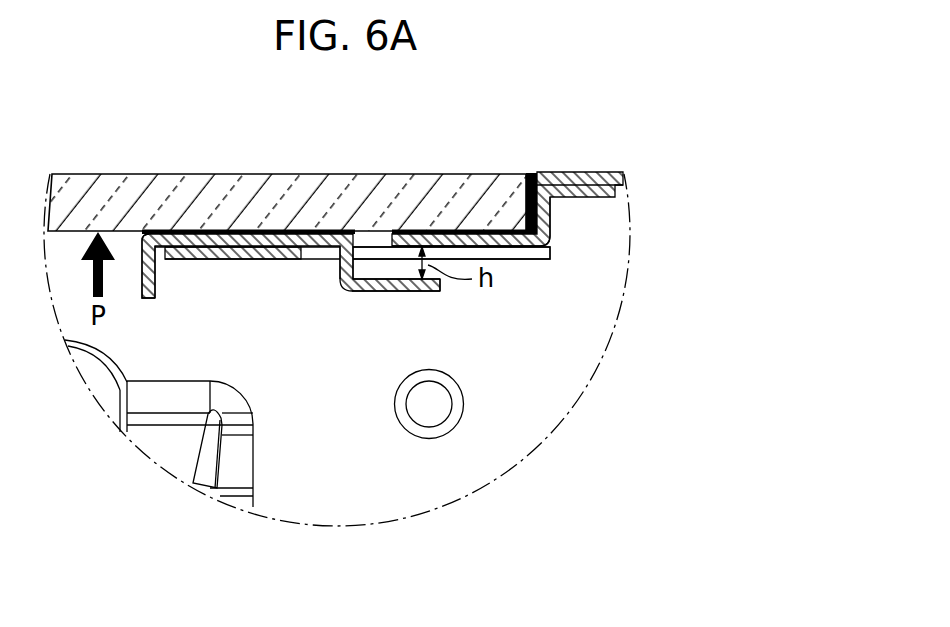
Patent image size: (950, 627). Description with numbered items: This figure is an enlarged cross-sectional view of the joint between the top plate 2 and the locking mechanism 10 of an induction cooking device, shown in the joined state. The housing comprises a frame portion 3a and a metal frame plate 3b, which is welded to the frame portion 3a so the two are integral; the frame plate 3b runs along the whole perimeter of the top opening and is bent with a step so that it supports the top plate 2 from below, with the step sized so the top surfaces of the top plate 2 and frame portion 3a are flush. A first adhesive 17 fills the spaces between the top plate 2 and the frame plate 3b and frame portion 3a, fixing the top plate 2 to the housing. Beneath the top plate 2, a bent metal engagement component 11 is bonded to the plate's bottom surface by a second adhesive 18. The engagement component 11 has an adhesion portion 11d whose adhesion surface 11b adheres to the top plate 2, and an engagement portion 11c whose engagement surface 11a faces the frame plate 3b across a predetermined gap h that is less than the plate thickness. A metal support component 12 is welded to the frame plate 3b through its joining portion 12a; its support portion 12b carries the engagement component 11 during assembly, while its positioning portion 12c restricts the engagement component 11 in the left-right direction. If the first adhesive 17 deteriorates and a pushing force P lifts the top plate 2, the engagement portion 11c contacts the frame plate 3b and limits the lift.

The top plate 2 is at (370, 174).
The frame portion 3a is at (584, 173).
The frame plate 3b is at (552, 217).
The locking mechanism 10 is at (542, 268).
The engagement component 11 is at (367, 292).
The engagement surface 11a is at (442, 292).
The adhesion surface 11b is at (304, 238).
The engagement portion 11c is at (418, 292).
The adhesion portion 11d is at (183, 240).
The support component 12 is at (225, 262).
The joining portion 12a is at (516, 249).
The support portion 12b is at (252, 261).
The positioning portion 12c is at (275, 262).
The first adhesive 17 is at (530, 173).
The second adhesive 18 is at (203, 230).